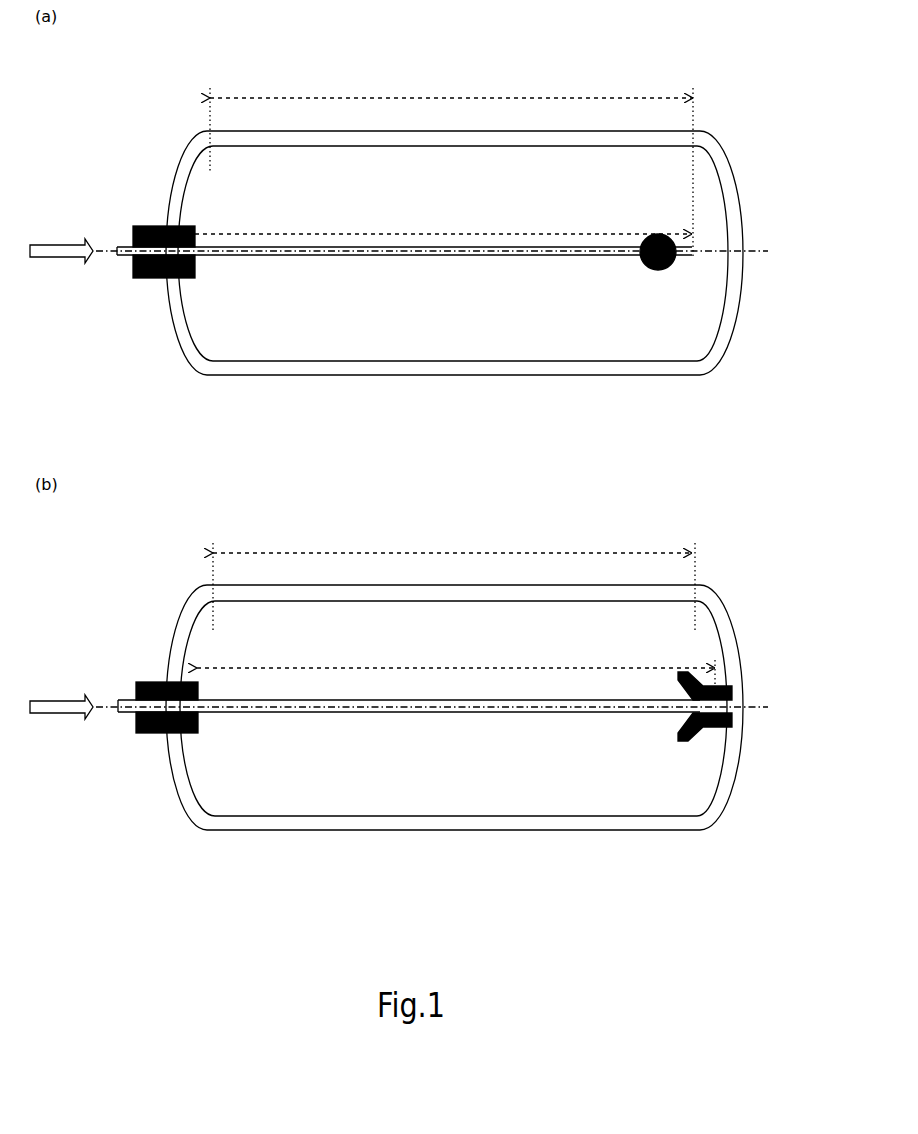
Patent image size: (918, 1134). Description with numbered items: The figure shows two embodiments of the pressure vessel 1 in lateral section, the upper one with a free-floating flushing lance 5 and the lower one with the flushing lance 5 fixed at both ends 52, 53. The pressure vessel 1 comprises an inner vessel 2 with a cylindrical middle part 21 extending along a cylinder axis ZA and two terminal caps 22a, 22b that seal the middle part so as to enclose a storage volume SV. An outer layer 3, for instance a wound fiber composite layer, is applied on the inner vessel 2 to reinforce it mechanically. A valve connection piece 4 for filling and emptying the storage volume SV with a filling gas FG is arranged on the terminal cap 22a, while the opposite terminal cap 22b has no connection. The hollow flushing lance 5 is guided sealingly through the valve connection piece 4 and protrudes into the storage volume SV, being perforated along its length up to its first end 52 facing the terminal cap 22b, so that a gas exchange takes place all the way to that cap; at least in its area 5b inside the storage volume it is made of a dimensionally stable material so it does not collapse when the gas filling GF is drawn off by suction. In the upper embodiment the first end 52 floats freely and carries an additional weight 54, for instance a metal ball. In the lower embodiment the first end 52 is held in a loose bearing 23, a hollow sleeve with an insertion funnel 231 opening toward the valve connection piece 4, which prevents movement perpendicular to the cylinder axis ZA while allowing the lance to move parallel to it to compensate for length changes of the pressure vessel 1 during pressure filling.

The pressure vessel 1 is at (125, 110).
The inner vessel 2 is at (453, 452).
The cylindrical middle part 21 is at (417, 637).
The terminal cap 22a is at (197, 335).
The terminal cap 22b is at (713, 180).
The loose bearing 23 is at (712, 748).
The insertion funnel 231 is at (667, 730).
The outer layer 3 is at (187, 360).
The valve connection piece 4 is at (138, 223).
The flushing lance 5 is at (378, 256).
The area within the storage volume 5b is at (365, 228).
The first end 52 is at (682, 263).
The second end 53 is at (123, 262).
The additional weight 54 is at (648, 267).
The cylinder axis ZA is at (449, 482).
The filling gas FG is at (61, 494).
The gas filling GF is at (347, 294).
The storage volume SV is at (520, 187).